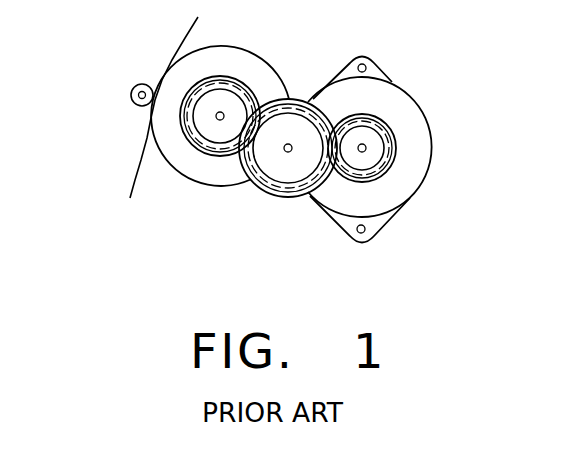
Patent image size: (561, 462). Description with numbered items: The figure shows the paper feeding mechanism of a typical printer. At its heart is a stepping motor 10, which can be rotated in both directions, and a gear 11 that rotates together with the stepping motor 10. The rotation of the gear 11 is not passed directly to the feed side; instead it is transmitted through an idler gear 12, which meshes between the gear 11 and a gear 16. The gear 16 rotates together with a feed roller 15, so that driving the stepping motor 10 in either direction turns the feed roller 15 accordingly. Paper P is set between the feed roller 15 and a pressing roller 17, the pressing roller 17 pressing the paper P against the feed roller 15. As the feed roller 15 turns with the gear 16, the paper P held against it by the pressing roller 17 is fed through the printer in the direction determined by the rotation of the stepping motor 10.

The stepping motor 10 is at (418, 146).
The gear 11 is at (388, 174).
The idler gear 12 is at (286, 198).
The feed roller 15 is at (244, 50).
The gear 16 is at (253, 93).
The pressing roller 17 is at (131, 96).
The paper P is at (182, 36).